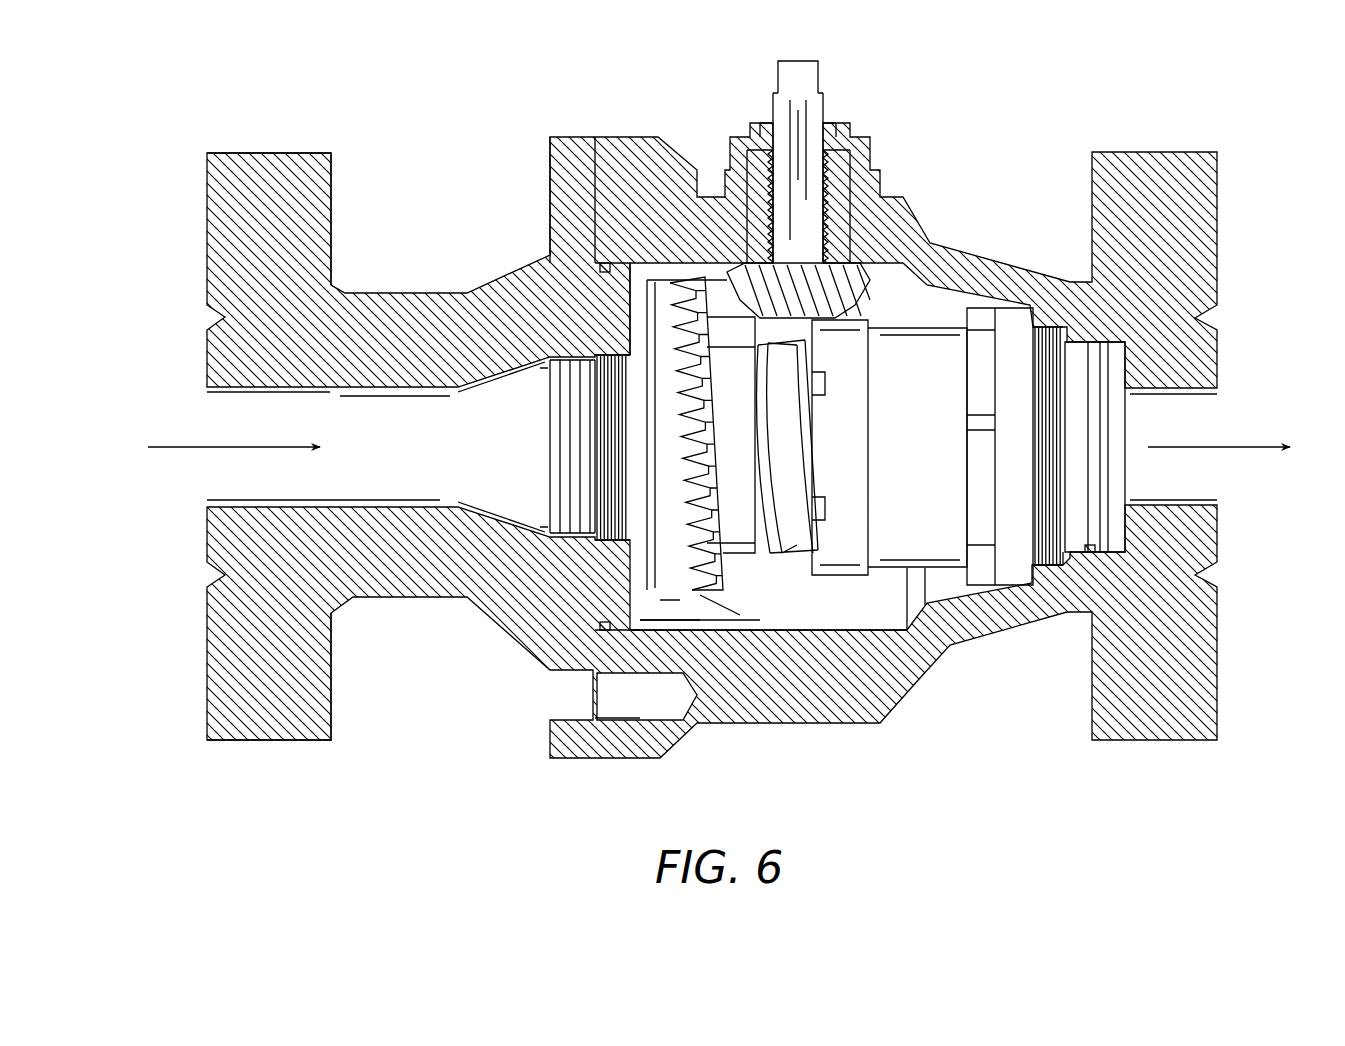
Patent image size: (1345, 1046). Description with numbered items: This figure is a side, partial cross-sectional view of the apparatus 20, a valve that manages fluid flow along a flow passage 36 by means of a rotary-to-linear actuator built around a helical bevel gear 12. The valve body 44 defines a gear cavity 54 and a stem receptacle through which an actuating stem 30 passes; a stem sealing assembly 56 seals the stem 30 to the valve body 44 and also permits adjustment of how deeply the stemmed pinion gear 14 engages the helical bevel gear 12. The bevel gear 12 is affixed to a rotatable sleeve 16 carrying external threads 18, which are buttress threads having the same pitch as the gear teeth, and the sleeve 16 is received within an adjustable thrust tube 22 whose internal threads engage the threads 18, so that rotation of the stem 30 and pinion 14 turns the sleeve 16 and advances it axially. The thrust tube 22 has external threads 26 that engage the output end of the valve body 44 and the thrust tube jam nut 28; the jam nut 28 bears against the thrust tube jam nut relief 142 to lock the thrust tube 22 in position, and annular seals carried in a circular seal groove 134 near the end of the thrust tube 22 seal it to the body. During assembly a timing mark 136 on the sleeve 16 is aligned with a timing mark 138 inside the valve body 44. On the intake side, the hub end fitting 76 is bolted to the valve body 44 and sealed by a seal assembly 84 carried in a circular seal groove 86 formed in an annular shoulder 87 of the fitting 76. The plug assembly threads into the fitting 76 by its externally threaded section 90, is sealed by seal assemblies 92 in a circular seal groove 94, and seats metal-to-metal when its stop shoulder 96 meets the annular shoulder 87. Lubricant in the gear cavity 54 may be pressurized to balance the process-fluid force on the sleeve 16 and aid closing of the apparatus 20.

The apparatus 20 is at (707, 413).
The valve body 44 is at (907, 700).
The hub end fitting 76 is at (392, 600).
The seal assembly 84 is at (603, 260).
The circular seal groove 86 is at (611, 262).
The timing mark 136 is at (640, 300).
The timing mark 138 is at (688, 268).
The stop shoulder 96 is at (620, 315).
The actuating stem 30 is at (786, 75).
The stem sealing assembly 56 is at (872, 78).
The stemmed pinion gear 14 is at (880, 270).
The annular shoulder 87 is at (620, 615).
The rotatable sleeve 16 is at (673, 612).
The external threads 18 is at (780, 553).
The helical bevel gear 12 is at (740, 617).
The thrust tube 22 is at (929, 479).
The gear cavity 54 is at (846, 616).
The thrust tube jam nut 28 is at (1012, 320).
The external threads 26 is at (1046, 327).
The thrust tube jam nut relief 142 is at (1033, 585).
The circular seal groove 134 is at (1093, 475).
The externally threaded section 90 is at (610, 550).
The seal assemblies 92 is at (567, 540).
The circular seal groove 94 is at (540, 537).
The flow passage 36 is at (168, 447).